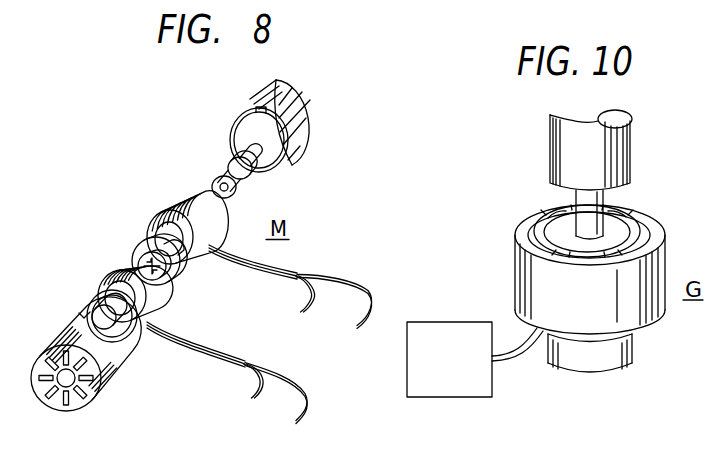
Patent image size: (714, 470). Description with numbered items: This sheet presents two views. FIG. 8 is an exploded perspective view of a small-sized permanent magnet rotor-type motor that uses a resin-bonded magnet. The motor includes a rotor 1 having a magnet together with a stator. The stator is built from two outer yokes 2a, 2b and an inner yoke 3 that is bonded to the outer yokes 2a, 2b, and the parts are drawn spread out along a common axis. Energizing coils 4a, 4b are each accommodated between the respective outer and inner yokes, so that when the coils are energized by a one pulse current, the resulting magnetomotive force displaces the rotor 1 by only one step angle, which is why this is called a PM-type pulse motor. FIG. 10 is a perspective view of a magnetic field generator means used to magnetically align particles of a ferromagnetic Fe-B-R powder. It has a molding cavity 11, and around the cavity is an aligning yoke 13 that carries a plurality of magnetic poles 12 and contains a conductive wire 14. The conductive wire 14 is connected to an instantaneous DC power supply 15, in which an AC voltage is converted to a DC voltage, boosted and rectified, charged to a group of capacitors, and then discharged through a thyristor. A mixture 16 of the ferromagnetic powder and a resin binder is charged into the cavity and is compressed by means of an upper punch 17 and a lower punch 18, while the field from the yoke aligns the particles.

In FIG. 8, the rotor 1 is at (227, 160).
In FIG. 8, the outer yoke 2a is at (63, 317).
In FIG. 8, the outer yoke 2b is at (249, 99).
In FIG. 8, the inner yoke 3 is at (133, 247).
In FIG. 8, the energizing coil 4a is at (110, 278).
In FIG. 8, the energizing coil 4b is at (173, 203).
In FIG. 10, the molding cavity 11 is at (563, 226).
In FIG. 10, the magnetic poles 12 is at (543, 225).
In FIG. 10, the aligning yoke 13 is at (523, 223).
In FIG. 10, the conductive wire 14 is at (528, 240).
In FIG. 10, the instantaneous DC power supply 15 is at (466, 322).
In FIG. 10, the mixture 16 is at (618, 236).
In FIG. 10, the punch 17 is at (623, 146).
In FIG. 10, the punch 18 is at (588, 364).